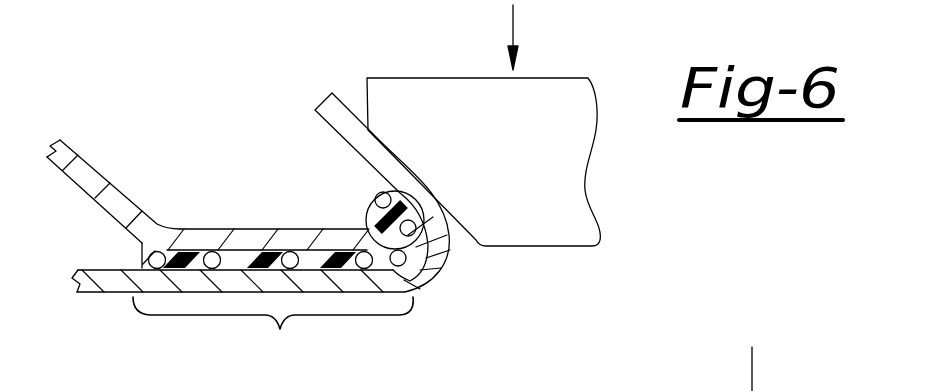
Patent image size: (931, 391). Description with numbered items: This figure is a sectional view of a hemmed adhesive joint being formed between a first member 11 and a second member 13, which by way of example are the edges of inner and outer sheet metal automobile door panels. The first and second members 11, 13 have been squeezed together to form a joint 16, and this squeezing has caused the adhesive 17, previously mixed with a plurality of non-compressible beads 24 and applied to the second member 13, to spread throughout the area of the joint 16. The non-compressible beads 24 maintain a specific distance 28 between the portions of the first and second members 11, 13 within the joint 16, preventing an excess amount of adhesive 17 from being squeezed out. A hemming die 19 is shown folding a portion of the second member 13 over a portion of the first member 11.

The first member 11 is at (93, 160).
The second member 13 is at (113, 294).
The joint 16 is at (273, 301).
The adhesive 17 is at (380, 196).
The hemming die 19 is at (434, 77).
The non-compressible beads 24 is at (281, 250).
The specific distance 28 is at (128, 248).